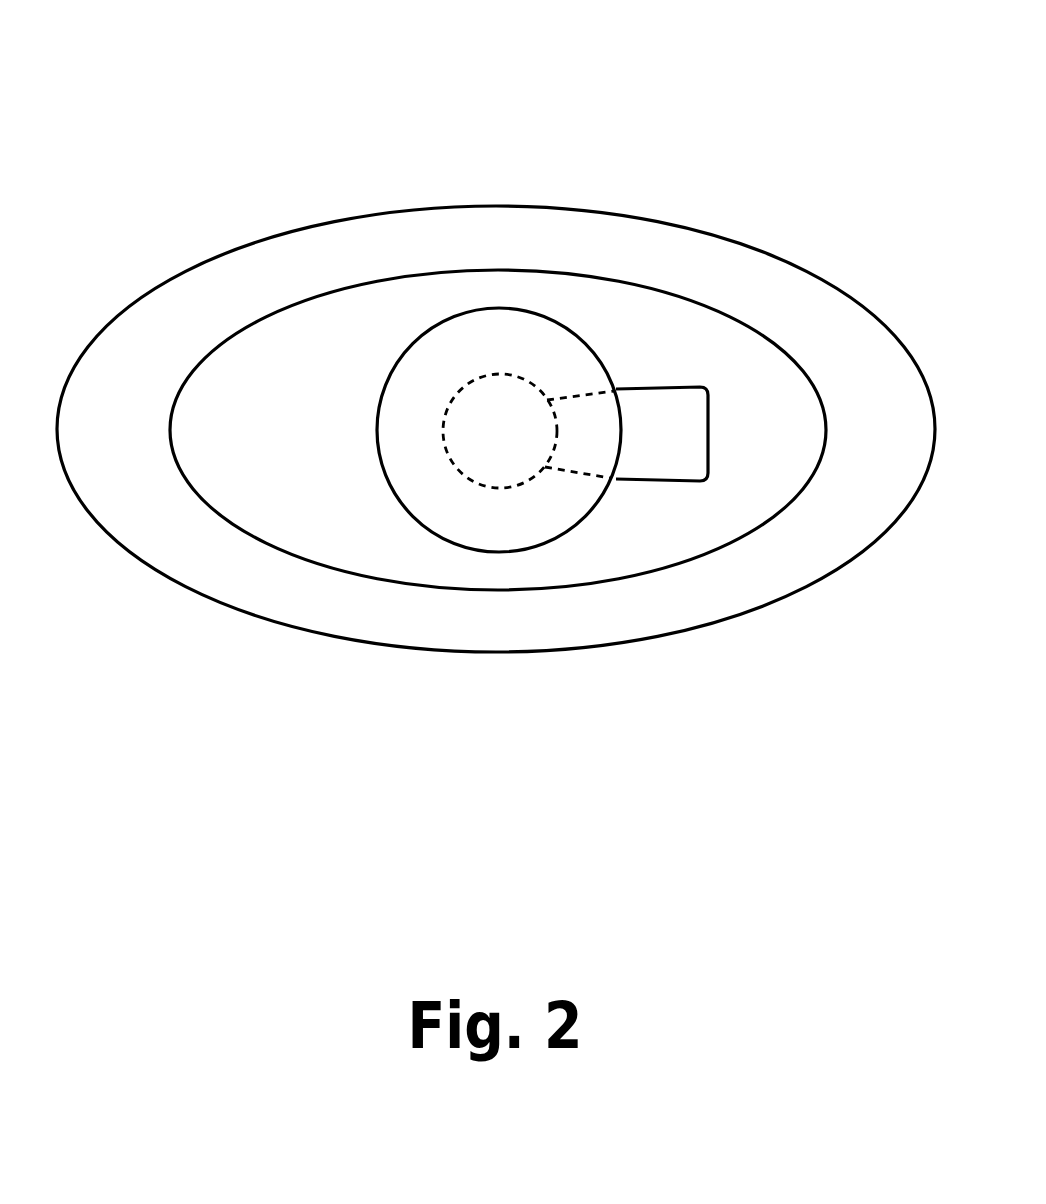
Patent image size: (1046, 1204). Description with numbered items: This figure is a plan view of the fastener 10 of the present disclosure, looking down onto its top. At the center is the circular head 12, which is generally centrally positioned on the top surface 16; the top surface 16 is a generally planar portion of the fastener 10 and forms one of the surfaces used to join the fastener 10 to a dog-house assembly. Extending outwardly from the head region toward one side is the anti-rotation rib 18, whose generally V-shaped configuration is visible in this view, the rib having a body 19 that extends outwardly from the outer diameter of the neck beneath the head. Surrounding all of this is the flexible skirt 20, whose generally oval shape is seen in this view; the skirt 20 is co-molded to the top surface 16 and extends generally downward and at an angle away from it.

The fastener 10 is at (600, 142).
The circular head 12 is at (473, 528).
The top surface 16 is at (322, 320).
The anti-rotation rib 18 is at (680, 472).
The body 19 is at (647, 418).
The flexible skirt 20 is at (172, 302).